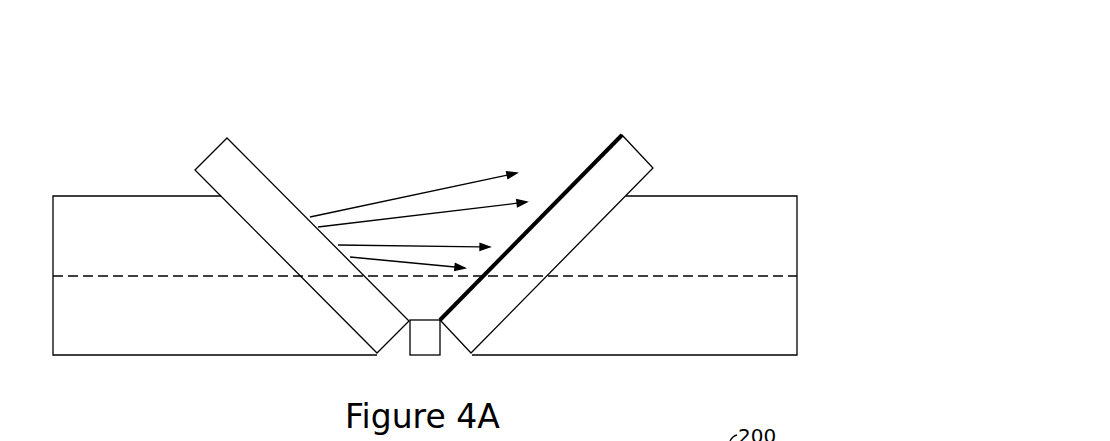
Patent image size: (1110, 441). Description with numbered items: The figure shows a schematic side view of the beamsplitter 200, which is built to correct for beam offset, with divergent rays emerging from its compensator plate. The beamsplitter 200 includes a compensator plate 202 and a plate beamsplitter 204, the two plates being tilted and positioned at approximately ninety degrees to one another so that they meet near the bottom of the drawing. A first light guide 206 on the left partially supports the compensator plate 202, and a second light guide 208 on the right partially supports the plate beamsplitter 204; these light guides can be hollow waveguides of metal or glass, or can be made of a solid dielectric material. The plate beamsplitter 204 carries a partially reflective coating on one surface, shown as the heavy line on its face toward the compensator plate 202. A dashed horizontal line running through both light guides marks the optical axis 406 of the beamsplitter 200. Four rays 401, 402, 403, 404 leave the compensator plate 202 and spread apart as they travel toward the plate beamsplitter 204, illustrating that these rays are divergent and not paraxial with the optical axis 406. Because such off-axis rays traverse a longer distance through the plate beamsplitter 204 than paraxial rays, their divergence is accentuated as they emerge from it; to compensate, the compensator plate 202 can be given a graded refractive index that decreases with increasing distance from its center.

The beamsplitter 200 is at (727, 86).
The compensator plate 202 is at (195, 170).
The plate beamsplitter 204 is at (653, 133).
The first light guide 206 is at (200, 350).
The second light guide 208 is at (685, 342).
The divergent ray 401 is at (480, 177).
The divergent ray 402 is at (503, 200).
The divergent ray 403 is at (480, 237).
The divergent ray 404 is at (430, 270).
The optical axis 406 is at (682, 275).